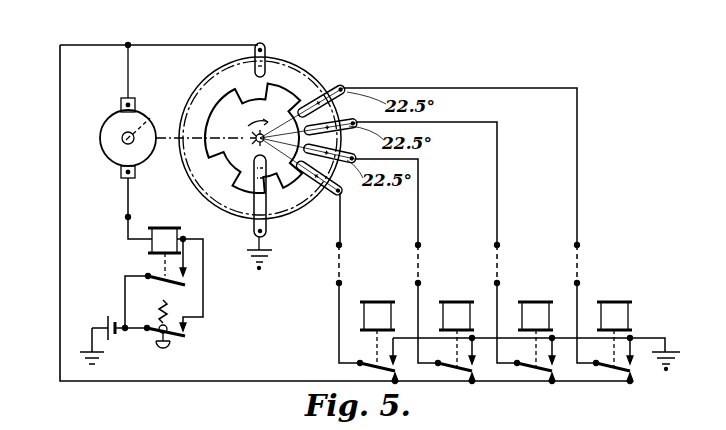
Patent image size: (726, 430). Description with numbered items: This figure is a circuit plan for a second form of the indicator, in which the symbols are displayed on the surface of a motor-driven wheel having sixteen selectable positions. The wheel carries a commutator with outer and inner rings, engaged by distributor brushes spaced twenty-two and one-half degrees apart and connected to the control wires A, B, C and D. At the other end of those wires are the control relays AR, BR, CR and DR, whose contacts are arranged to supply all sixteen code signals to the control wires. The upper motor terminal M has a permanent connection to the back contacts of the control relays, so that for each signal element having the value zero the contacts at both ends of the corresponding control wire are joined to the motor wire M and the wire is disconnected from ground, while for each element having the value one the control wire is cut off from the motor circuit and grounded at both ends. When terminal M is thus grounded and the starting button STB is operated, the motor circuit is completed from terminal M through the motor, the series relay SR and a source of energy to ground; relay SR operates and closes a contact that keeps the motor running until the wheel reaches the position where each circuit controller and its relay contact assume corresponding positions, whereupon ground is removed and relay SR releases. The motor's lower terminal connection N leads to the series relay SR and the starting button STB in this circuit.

The motor terminal M is at (82, 45).
The motor terminal connection N is at (125, 208).
The series relay SR is at (164, 268).
The starting button STB is at (150, 319).
The control wire A is at (327, 261).
The control wire B is at (371, 250).
The control wire C is at (411, 231).
The control wire D is at (447, 213).
The control relay AR is at (378, 333).
The control relay BR is at (456, 333).
The control relay CR is at (535, 333).
The control relay DR is at (614, 333).